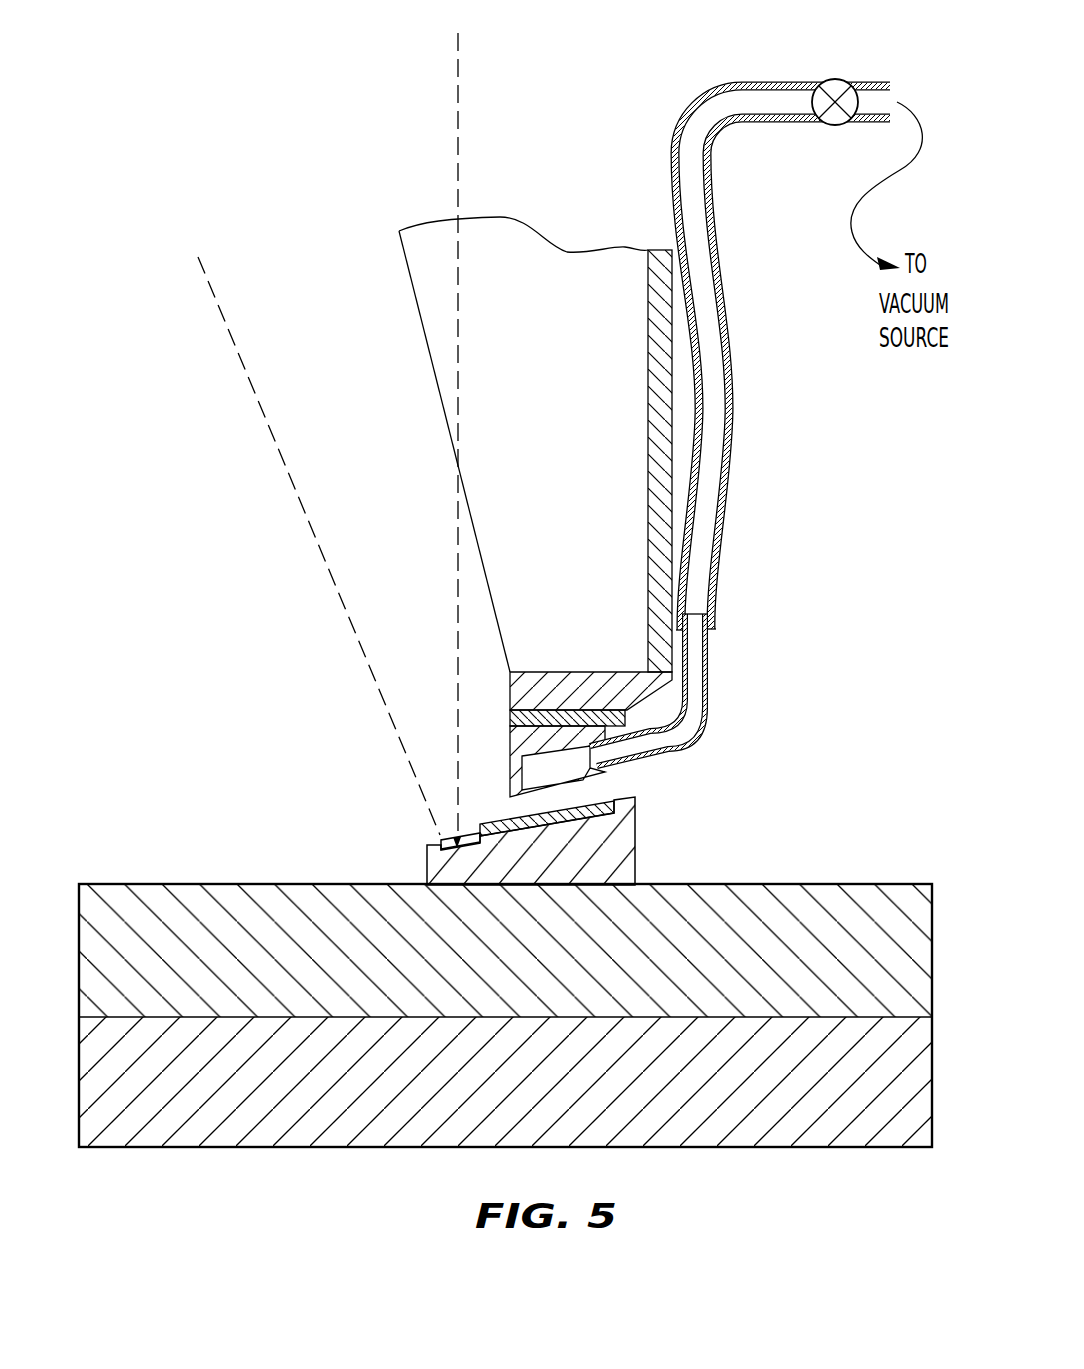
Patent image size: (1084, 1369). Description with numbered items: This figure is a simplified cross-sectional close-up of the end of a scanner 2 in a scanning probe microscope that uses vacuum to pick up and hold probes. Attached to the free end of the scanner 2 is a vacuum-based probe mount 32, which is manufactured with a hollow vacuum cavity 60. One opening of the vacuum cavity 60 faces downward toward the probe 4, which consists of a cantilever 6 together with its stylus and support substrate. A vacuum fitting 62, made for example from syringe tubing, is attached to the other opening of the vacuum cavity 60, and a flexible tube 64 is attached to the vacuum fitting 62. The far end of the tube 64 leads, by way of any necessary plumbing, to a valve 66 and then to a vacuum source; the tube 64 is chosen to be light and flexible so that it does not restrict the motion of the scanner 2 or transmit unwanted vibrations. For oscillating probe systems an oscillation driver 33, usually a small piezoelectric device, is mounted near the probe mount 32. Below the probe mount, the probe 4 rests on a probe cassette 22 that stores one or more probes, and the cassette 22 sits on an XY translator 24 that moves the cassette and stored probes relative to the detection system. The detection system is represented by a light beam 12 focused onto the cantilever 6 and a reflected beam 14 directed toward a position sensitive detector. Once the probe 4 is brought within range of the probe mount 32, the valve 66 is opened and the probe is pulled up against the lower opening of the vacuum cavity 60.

The scanner 2 is at (648, 324).
The probe 4 is at (606, 798).
The cantilever 6 is at (447, 841).
The light beam 12 is at (460, 122).
The reflected beam 14 is at (245, 368).
The probe cassette 22 is at (630, 851).
The XY translator 24 is at (823, 883).
The probe mount 32 is at (510, 738).
The oscillation driver 33 is at (510, 706).
The vacuum cavity 60 is at (528, 772).
The vacuum fitting 62 is at (708, 677).
The flexible tube 64 is at (733, 490).
The valve 66 is at (832, 125).